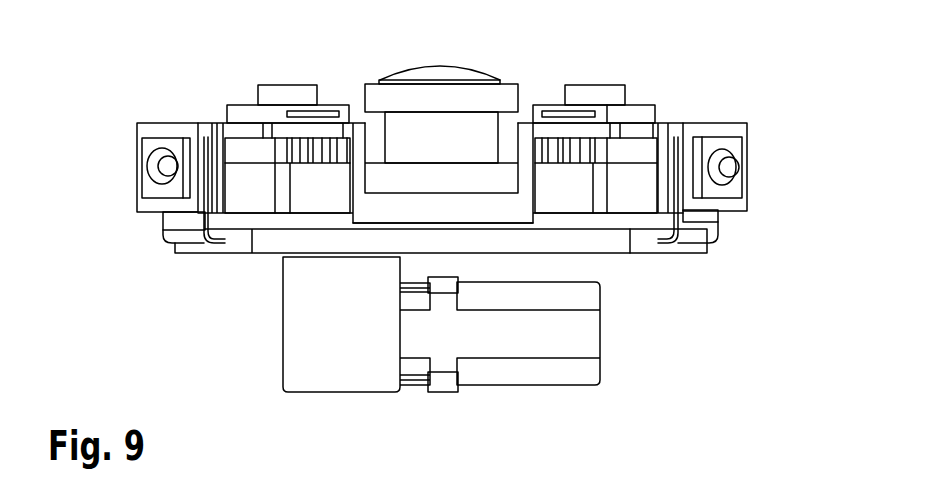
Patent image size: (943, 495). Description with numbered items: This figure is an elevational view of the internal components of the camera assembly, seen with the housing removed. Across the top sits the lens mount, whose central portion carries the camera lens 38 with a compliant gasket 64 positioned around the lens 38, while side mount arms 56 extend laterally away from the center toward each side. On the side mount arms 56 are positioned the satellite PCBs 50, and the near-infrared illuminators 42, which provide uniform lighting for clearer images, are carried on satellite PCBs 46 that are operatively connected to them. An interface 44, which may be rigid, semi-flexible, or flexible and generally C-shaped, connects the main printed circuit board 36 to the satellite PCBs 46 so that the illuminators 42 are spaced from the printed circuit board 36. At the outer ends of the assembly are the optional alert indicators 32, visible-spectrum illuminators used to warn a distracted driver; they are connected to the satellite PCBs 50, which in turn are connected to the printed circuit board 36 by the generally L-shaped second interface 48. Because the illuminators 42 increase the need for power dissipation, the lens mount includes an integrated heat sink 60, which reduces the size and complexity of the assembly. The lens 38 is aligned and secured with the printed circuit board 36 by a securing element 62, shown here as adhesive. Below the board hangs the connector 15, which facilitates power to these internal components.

The connector 15 is at (288, 402).
The alert indicator 32 is at (150, 165).
The printed circuit board 36 is at (645, 243).
The camera lens 38 is at (455, 70).
The illuminator 42 is at (291, 85).
The interface 44 is at (242, 217).
The satellite PCB 46 is at (334, 105).
The second interface 48 is at (162, 226).
The satellite PCB 50 is at (158, 130).
The side mount arm 56 is at (663, 178).
The integrated heat sink 60 is at (240, 150).
The securing element 62 is at (503, 223).
The compliant gasket 64 is at (505, 81).